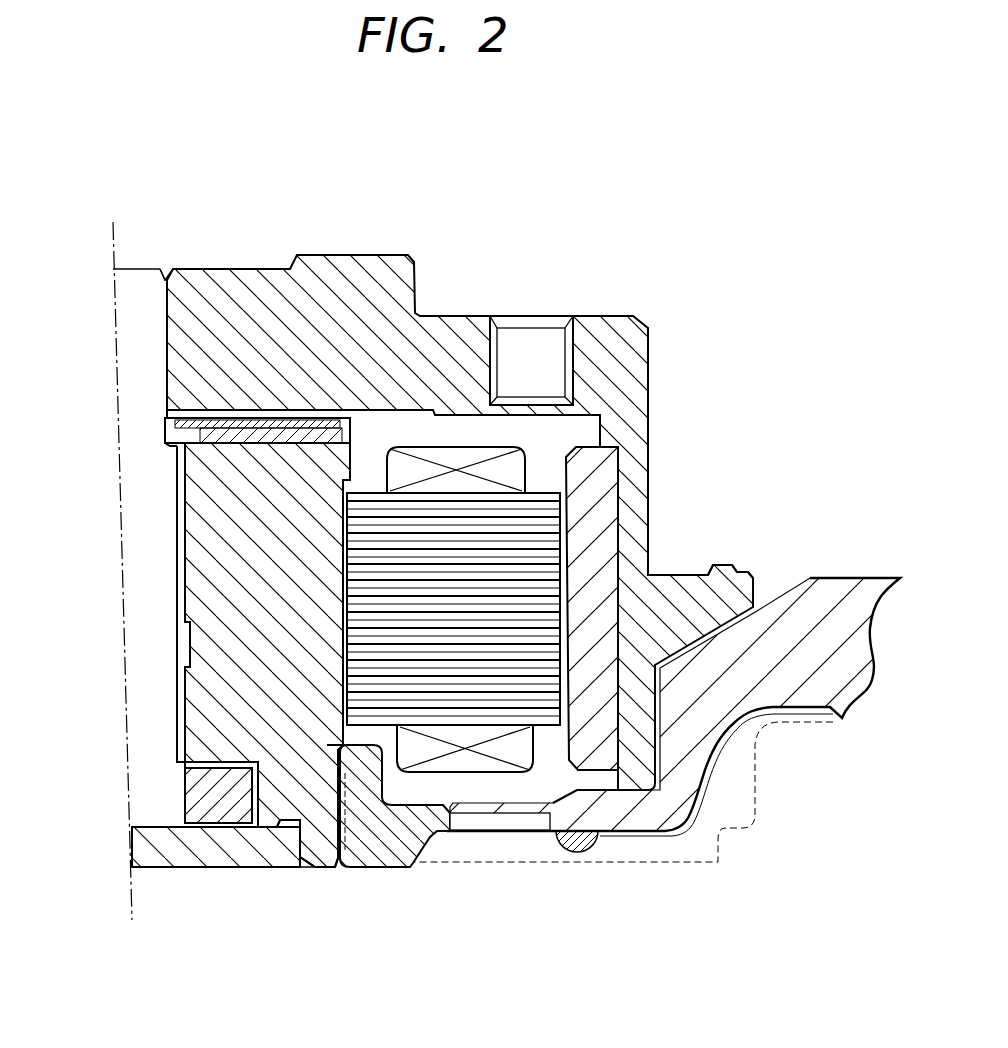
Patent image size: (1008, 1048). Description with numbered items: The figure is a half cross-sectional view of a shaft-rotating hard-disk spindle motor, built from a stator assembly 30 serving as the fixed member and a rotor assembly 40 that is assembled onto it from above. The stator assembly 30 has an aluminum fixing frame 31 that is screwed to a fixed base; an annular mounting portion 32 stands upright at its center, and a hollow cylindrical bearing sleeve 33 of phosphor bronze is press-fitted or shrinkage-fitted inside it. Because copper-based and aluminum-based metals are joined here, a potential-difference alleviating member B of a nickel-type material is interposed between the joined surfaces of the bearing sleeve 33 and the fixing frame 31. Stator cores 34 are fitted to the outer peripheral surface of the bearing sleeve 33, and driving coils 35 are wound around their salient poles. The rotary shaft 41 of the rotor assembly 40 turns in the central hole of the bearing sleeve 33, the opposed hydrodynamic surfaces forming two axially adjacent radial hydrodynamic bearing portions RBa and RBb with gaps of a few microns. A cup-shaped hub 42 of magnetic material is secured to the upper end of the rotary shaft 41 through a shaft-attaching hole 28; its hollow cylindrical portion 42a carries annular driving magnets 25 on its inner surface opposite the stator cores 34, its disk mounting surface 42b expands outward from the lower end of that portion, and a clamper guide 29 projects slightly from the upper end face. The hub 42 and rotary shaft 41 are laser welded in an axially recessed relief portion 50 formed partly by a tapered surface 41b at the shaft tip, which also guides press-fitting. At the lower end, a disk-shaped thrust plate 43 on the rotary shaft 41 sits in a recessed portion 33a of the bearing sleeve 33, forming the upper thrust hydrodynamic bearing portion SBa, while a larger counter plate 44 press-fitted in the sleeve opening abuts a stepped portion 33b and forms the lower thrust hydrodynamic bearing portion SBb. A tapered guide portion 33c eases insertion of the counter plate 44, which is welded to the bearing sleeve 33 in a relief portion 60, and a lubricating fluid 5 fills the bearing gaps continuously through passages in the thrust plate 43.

The rotor assembly 40 is at (480, 444).
The relief portion 50 is at (163, 258).
The clamper guide 29 is at (348, 272).
The hub 42 is at (467, 330).
The rotary shaft 41 is at (118, 300).
The tapered surface 41b is at (163, 274).
The shaft-attaching hole 28 is at (168, 355).
The driving coils 35 is at (513, 465).
The stator cores 34 is at (522, 532).
The hollow cylindrical portion 42a is at (640, 495).
The driving magnets 25 is at (603, 555).
The disk mounting surface 42b is at (740, 563).
The bearing sleeve 33 is at (270, 519).
The radial hydrodynamic bearing portion RBa is at (173, 517).
The lubricating fluid 5 is at (177, 637).
The radial hydrodynamic bearing portion RBb is at (177, 685).
The upper thrust hydrodynamic bearing portion SBa is at (177, 737).
The thrust plate 43 is at (180, 787).
The counter plate 44 is at (153, 857).
The stator assembly 30 is at (477, 793).
The lower thrust hydrodynamic bearing portion SBb is at (220, 827).
The relief portion 60 is at (289, 882).
The tapered guide portion 33c is at (307, 847).
The stepped portion 33b is at (270, 817).
The recessed portion 33a is at (230, 752).
The potential-difference alleviating member B is at (368, 867).
The annular mounting portion 32 is at (387, 836).
The fixing frame 31 is at (712, 725).